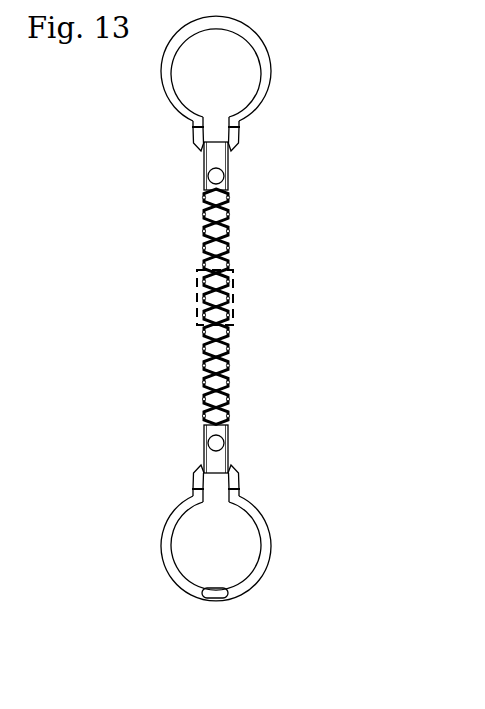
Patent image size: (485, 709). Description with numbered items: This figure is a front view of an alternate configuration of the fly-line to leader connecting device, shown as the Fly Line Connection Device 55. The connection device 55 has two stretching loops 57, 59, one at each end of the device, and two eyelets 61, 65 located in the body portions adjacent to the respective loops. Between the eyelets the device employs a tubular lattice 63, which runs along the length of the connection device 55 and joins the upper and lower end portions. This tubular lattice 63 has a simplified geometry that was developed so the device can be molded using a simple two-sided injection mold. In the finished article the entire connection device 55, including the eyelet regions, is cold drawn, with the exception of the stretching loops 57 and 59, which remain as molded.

The Fly Line Connection Device 55 is at (190, 220).
The stretching loop 57 is at (277, 62).
The stretching loop 59 is at (270, 526).
The eyelet 61 is at (225, 172).
The tubular lattice 63 is at (233, 293).
The eyelet 65 is at (226, 435).